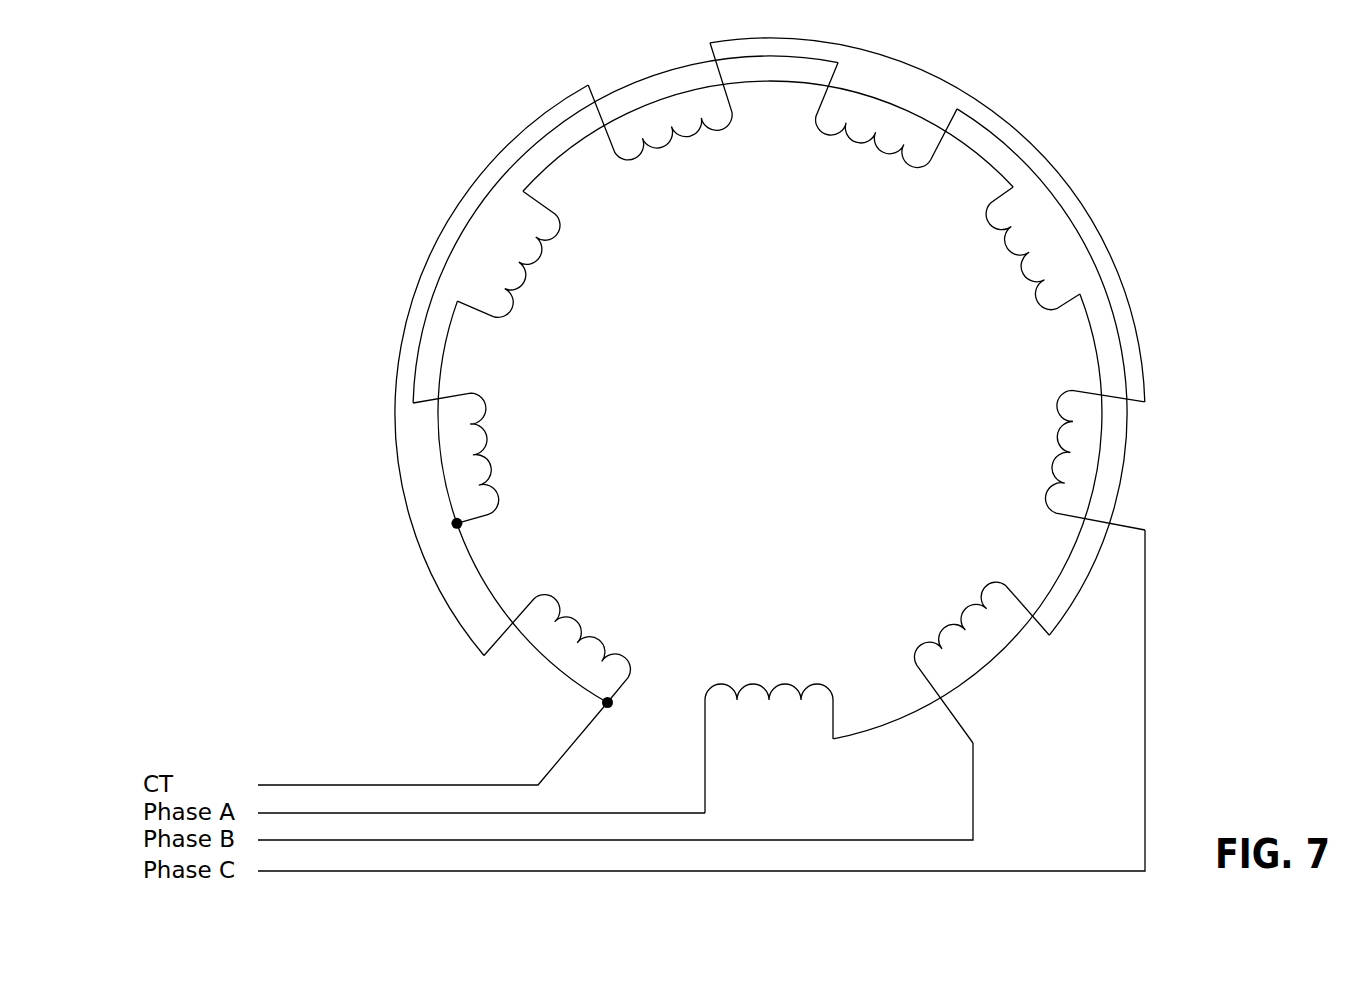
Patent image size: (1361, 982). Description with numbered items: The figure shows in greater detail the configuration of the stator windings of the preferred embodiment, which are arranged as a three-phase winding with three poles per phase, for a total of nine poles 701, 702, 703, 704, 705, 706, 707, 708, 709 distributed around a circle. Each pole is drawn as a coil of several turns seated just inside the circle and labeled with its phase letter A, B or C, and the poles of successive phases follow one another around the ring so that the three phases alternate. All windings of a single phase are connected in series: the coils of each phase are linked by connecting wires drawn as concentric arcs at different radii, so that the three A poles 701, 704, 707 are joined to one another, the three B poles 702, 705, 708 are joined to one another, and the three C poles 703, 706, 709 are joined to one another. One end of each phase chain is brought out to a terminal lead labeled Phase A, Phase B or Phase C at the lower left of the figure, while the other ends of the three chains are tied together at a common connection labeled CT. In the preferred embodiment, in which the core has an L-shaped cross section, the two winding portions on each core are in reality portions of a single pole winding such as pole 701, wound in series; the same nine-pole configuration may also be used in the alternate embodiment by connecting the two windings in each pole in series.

The pole 701 is at (781, 715).
The pole 702 is at (981, 647).
The pole 703 is at (1055, 460).
The pole 704 is at (996, 248).
The pole 705 is at (887, 132).
The pole 706 is at (660, 133).
The pole 707 is at (525, 274).
The pole 708 is at (502, 458).
The pole 709 is at (557, 626).